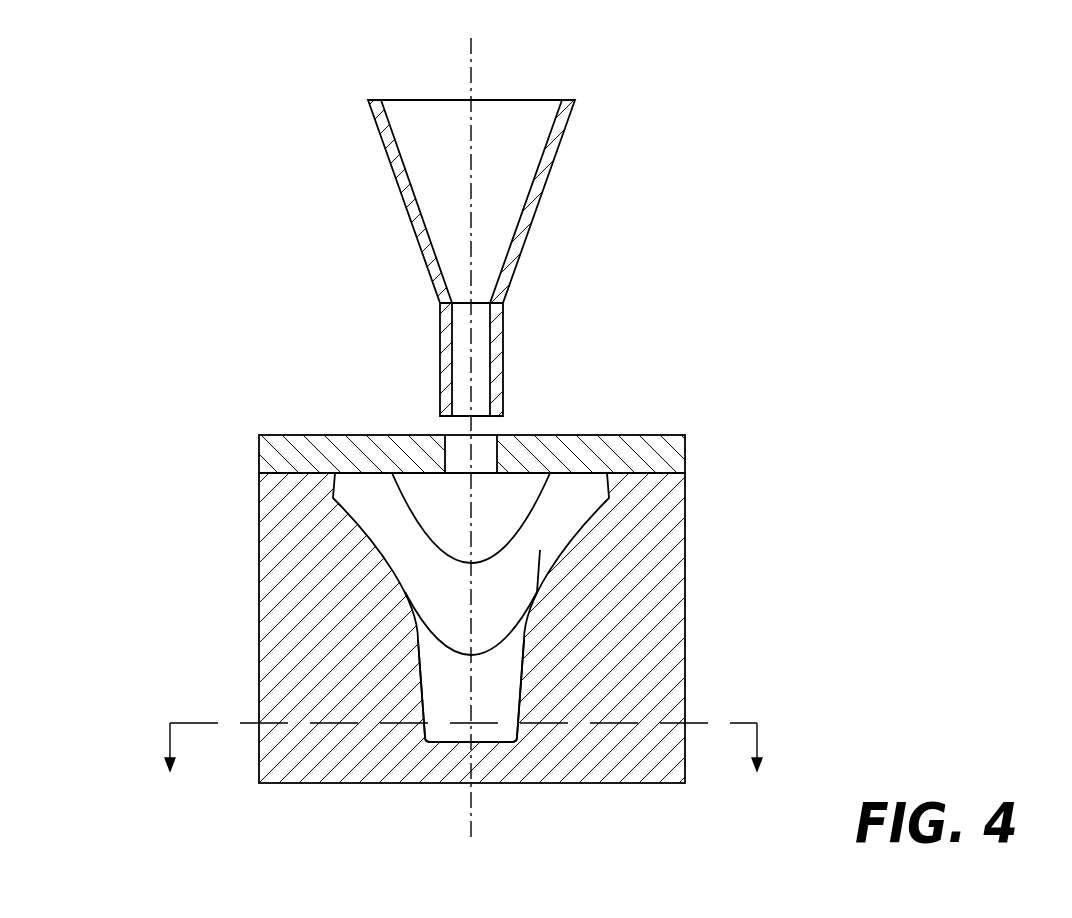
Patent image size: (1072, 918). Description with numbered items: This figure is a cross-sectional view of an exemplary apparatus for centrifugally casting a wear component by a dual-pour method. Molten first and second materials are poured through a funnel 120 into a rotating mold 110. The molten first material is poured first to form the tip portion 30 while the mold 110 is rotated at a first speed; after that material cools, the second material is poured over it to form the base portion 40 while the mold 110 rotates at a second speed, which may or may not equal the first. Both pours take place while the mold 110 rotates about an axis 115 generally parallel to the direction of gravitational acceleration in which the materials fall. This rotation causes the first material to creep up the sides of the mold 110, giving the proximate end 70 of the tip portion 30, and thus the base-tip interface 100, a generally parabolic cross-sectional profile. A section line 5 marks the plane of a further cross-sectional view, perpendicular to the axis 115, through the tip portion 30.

The axis 115 is at (472, 60).
The funnel 120 is at (386, 144).
The mold 110 is at (643, 602).
The base portion 40 is at (539, 546).
The proximate end 70 is at (346, 614).
The base-tip interface 100 is at (457, 653).
The tip portion 30 is at (504, 685).
The section line 5- 5 is at (464, 764).